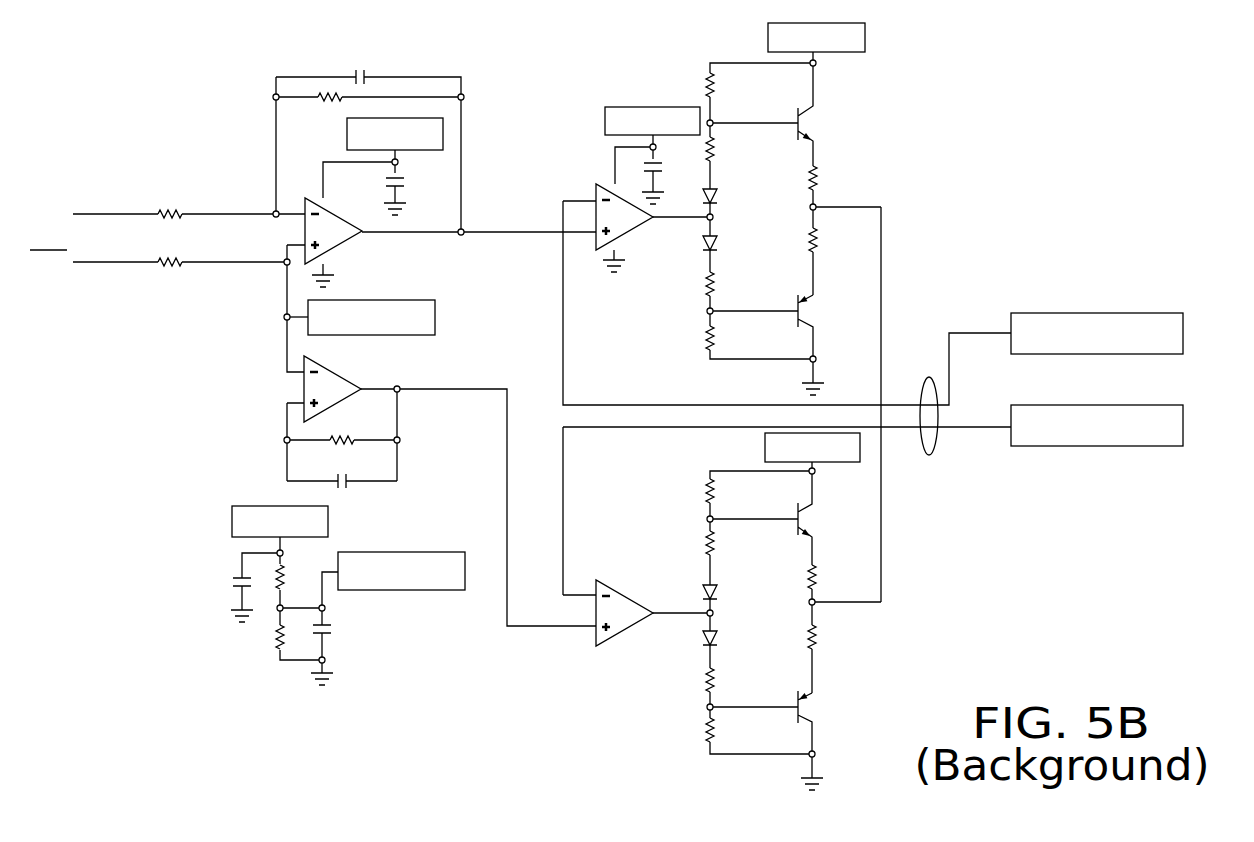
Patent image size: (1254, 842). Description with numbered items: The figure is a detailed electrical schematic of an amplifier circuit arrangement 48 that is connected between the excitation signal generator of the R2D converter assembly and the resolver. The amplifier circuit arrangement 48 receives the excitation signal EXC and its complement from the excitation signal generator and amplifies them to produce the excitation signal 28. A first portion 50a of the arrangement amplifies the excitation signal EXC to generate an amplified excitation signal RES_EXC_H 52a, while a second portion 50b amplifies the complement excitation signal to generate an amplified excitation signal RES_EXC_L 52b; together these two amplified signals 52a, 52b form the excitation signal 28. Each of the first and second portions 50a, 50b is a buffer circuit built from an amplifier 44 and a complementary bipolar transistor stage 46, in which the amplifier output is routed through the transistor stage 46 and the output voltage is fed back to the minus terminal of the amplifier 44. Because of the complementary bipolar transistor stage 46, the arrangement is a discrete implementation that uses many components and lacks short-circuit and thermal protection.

The excitation signal 28 is at (922, 388).
The amplifier 44 is at (629, 233).
The complementary bipolar transistor stage 46 is at (755, 58).
The amplifier circuit arrangement 48 is at (940, 90).
The first portion 50a is at (578, 142).
The second portion 50b is at (610, 688).
The amplified excitation signal (RES_EXC_H) 52a is at (1093, 313).
The amplified excitation signal (RES_EXC_L) 52b is at (1093, 446).